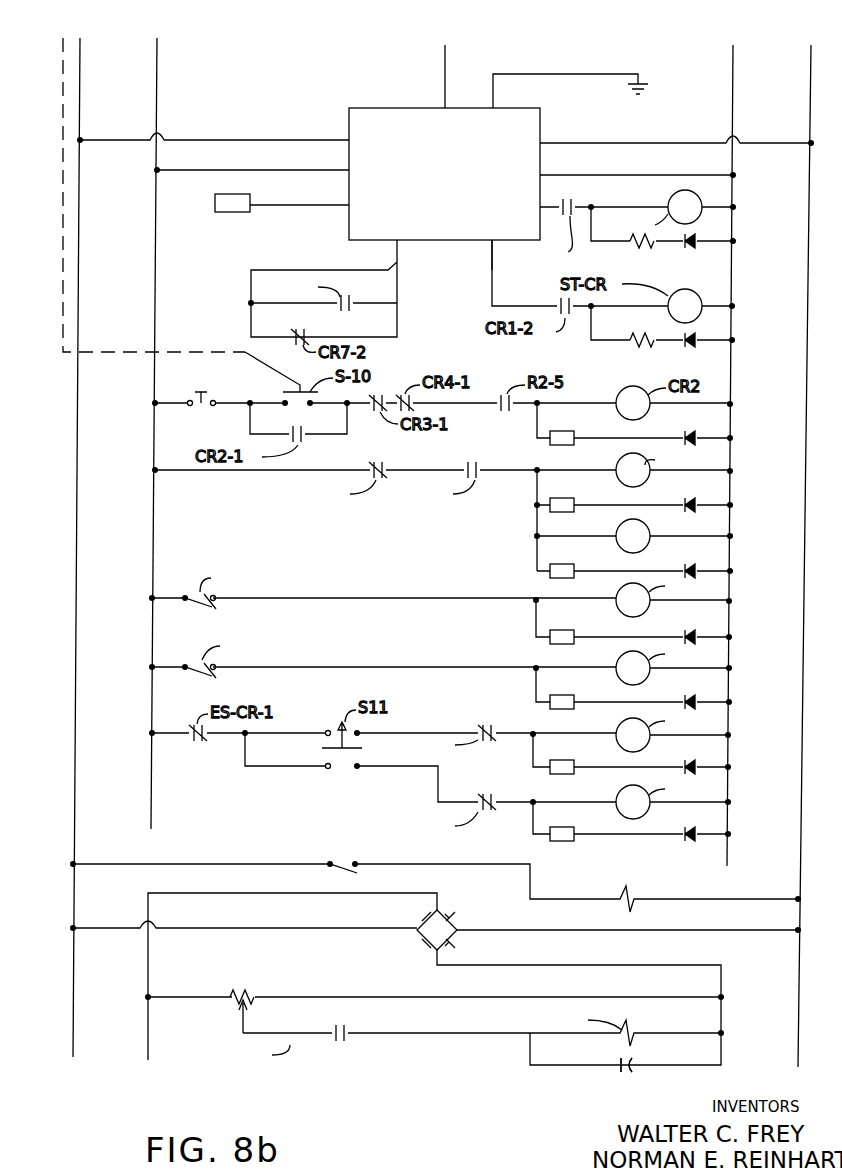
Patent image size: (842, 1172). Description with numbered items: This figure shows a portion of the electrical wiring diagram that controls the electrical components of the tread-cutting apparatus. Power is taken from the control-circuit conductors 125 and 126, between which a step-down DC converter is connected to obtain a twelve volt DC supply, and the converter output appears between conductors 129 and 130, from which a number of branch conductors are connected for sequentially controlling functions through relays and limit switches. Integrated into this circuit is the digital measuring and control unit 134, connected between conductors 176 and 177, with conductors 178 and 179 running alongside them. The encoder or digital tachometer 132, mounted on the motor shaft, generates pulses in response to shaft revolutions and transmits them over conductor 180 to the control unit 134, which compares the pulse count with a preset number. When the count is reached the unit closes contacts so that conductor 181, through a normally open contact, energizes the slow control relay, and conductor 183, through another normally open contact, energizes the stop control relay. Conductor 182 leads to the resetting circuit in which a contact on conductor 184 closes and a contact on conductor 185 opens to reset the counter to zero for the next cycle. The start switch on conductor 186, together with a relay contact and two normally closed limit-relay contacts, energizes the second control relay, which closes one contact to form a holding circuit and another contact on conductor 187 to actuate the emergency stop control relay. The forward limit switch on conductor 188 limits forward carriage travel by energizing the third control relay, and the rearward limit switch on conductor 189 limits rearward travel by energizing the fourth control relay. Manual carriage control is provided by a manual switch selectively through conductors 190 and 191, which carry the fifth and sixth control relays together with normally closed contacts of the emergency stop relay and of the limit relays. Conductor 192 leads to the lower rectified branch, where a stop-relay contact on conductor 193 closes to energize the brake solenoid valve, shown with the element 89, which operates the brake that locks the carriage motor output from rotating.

The solenoid valve contact 89 is at (638, 1033).
The conductor 125 is at (80, 50).
The conductor 126 is at (811, 52).
The conductor 129 is at (157, 78).
The conductor 130 is at (733, 70).
The encoder or digital tachometer 132 is at (235, 215).
The digital measuring and control unit 134 is at (425, 112).
The conductor 176 is at (330, 140).
The conductor 177 is at (572, 143).
The conductor 178 is at (243, 170).
The conductor 179 is at (652, 175).
The conductor 180 is at (330, 205).
The conductor 181 is at (563, 207).
The conductor 182 is at (336, 270).
The conductor 183 is at (492, 266).
The conductor 184 is at (340, 303).
The conductor 185 is at (397, 305).
The conductor 186 is at (362, 410).
The conductor 187 is at (290, 470).
The conductor 188 is at (315, 598).
The conductor 189 is at (318, 667).
The conductor 190 is at (422, 733).
The conductor 191 is at (438, 780).
The conductor 192 is at (535, 896).
The conductor 193 is at (430, 1033).